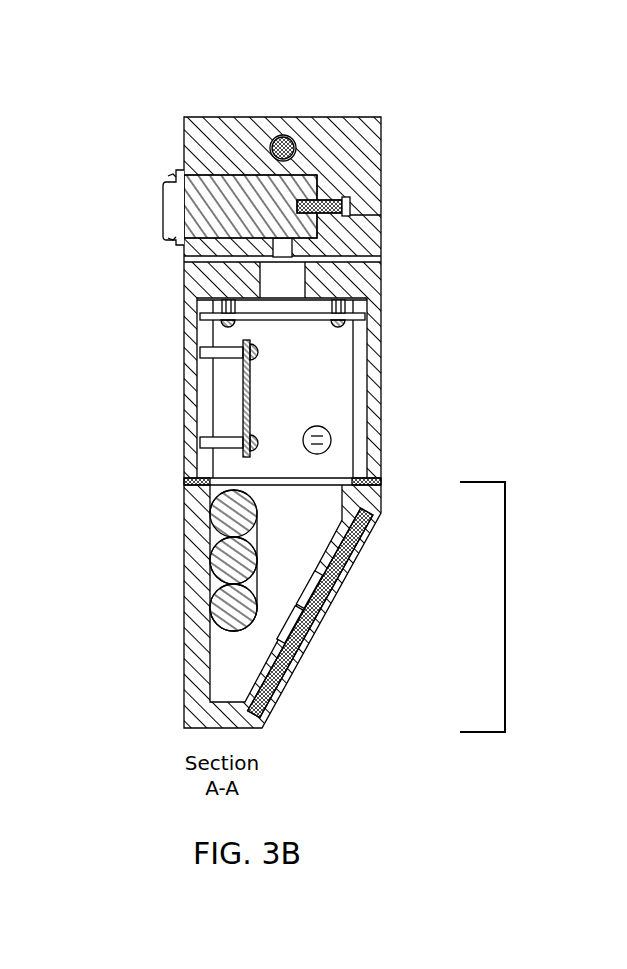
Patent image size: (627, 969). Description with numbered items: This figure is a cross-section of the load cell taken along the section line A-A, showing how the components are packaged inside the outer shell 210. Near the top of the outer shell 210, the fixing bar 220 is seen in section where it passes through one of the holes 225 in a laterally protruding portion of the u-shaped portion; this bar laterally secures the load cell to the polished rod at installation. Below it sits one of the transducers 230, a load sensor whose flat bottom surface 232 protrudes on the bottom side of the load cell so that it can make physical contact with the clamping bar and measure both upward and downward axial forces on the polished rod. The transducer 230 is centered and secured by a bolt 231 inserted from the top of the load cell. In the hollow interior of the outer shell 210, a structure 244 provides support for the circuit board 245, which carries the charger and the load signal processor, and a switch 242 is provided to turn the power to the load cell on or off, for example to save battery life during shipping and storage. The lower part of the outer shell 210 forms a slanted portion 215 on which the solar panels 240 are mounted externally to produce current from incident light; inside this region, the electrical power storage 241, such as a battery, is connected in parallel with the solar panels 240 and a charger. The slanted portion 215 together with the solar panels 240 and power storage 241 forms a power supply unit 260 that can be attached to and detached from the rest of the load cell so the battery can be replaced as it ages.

The outer shell 210 is at (372, 287).
The slanted portion 215 is at (338, 629).
The fixing bar 220 is at (285, 135).
The holes 225 is at (292, 137).
The transducer 230 is at (183, 202).
The bolt 231 is at (350, 212).
The flat bottom surface 232 is at (165, 195).
The solar panel 240 is at (325, 609).
The electrical power storage 241 is at (223, 607).
The switch 242 is at (325, 440).
The structure 244 is at (302, 317).
The circuit board 245 is at (242, 390).
The power supply unit 260 is at (505, 607).